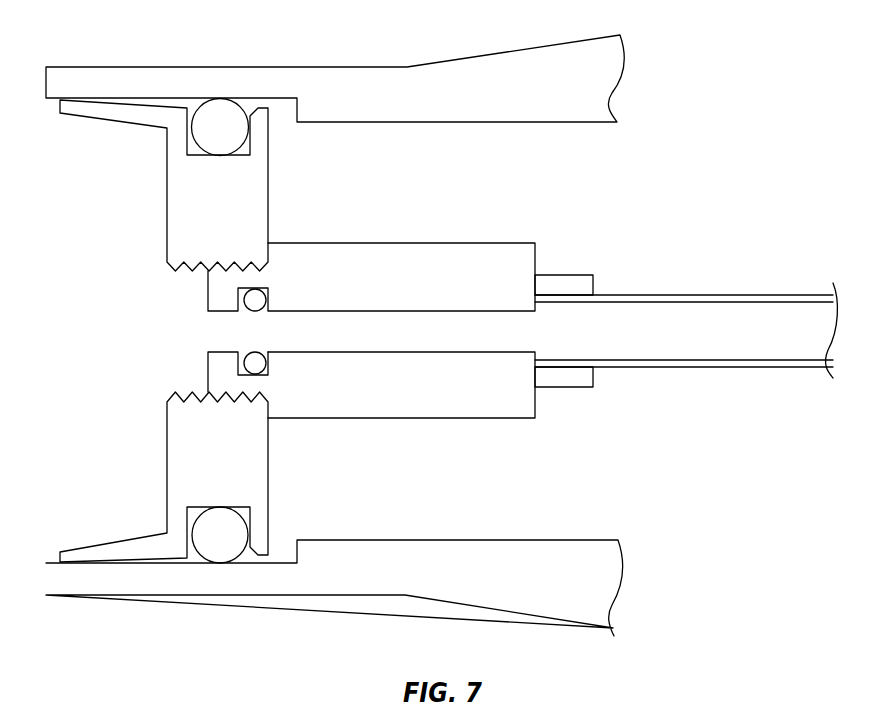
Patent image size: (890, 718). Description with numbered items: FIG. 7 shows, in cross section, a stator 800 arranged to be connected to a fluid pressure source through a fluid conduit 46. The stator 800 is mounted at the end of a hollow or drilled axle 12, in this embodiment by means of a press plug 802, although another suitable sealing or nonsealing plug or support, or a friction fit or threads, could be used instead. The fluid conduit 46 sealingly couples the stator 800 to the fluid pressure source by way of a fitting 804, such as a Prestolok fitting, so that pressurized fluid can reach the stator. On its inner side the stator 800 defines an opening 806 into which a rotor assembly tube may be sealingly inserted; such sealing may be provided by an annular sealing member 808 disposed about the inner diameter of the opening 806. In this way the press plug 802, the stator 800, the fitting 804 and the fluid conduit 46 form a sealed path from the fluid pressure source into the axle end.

The housing 12 is at (511, 51).
The fluid conduit 46 is at (700, 295).
The stator 800 is at (383, 243).
The press plug 802 is at (167, 197).
The fitting 804 is at (565, 275).
The opening 806 is at (220, 344).
The seal ring 808 is at (253, 312).